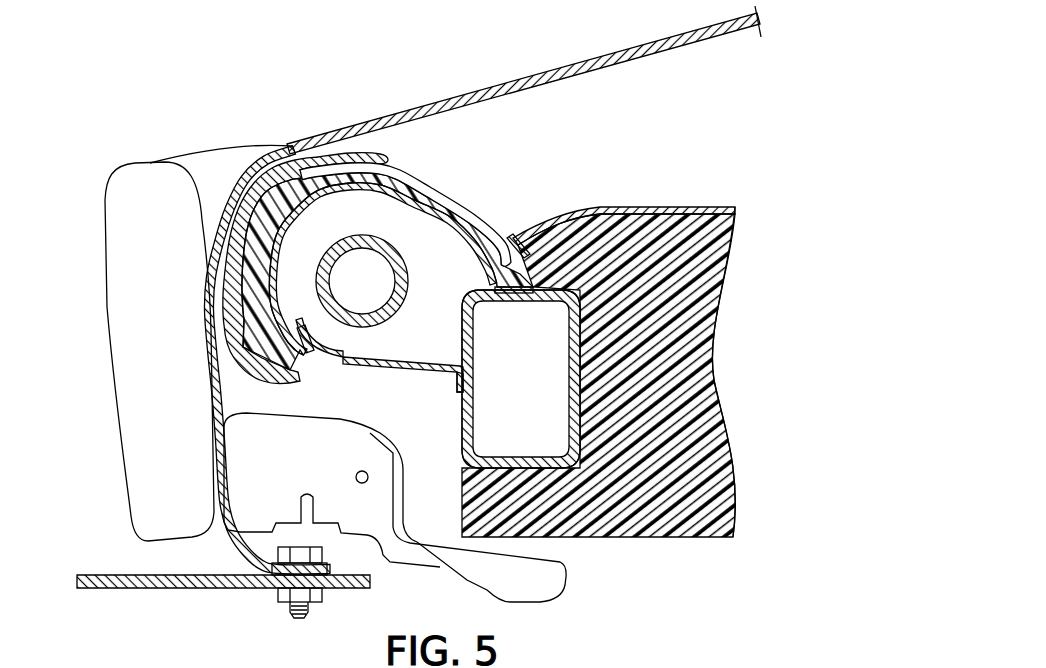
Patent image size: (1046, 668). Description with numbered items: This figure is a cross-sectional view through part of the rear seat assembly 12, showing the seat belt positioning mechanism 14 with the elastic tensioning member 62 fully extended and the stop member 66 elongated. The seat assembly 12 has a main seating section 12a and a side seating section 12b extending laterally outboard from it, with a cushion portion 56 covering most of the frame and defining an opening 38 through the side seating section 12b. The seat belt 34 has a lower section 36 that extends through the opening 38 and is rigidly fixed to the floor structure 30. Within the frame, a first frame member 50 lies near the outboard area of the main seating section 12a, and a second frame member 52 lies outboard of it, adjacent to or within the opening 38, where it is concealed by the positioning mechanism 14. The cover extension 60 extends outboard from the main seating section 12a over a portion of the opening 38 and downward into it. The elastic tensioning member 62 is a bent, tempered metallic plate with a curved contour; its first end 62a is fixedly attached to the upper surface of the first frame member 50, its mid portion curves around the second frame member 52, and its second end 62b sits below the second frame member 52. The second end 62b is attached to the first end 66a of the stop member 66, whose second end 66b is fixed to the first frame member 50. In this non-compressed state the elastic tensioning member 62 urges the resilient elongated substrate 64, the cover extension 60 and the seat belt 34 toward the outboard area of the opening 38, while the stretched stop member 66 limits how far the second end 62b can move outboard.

The seat assembly 12 is at (703, 206).
The main seating section 12a is at (637, 207).
The side seating section 12b is at (260, 143).
The seat belt positioning mechanism 14 is at (473, 209).
The floor structure 30 is at (137, 573).
The seat belt 34 is at (530, 76).
The lower section 36 is at (237, 553).
The opening 38 is at (210, 180).
The first frame member 50 is at (573, 395).
The second frame member 52 is at (395, 318).
The cushion portion 56 is at (667, 447).
The cover extension 60 is at (427, 193).
The elastic tensioning member 62 is at (283, 278).
The first end 62a is at (518, 240).
The second end 62b is at (303, 345).
The resilient elongated substrate 64 is at (378, 192).
The stop member 66 is at (398, 367).
The first end 66a is at (308, 335).
The second end 66b is at (457, 380).